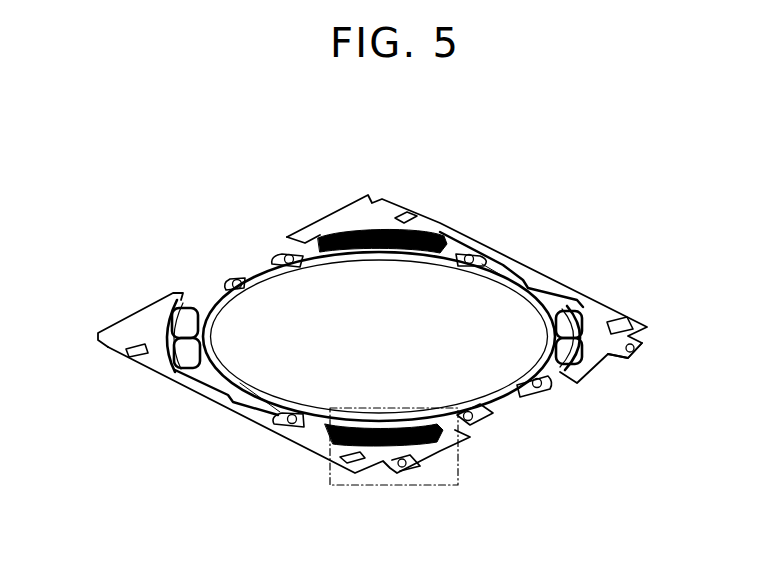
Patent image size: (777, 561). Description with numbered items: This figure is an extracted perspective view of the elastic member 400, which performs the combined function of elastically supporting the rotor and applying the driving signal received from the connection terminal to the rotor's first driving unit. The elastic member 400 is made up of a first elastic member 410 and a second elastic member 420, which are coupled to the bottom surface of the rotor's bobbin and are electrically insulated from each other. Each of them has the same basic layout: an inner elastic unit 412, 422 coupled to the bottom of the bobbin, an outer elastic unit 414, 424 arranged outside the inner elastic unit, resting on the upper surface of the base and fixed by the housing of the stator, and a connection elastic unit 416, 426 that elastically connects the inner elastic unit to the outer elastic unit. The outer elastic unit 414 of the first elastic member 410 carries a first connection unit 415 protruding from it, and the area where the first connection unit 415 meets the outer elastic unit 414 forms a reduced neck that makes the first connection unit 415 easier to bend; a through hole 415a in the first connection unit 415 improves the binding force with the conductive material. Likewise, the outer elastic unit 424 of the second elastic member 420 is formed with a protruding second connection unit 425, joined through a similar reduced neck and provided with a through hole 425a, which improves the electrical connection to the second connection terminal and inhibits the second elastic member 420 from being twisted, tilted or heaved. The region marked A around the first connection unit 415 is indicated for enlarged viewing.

The elastic member 400 is at (226, 230).
The first elastic member 410 is at (152, 380).
The inner elastic unit 412 is at (237, 410).
The outer elastic unit 414 is at (313, 450).
The first connection unit 415 is at (389, 470).
The through hole 415a is at (405, 468).
The connection elastic unit 416 is at (328, 424).
The second elastic member 420 is at (469, 208).
The inner elastic unit 422 is at (488, 261).
The outer elastic unit 424 is at (566, 283).
The second connection unit 425 is at (644, 345).
The through hole 425a is at (633, 351).
The connection elastic unit 426 is at (588, 318).
The enlarged region A is at (431, 408).